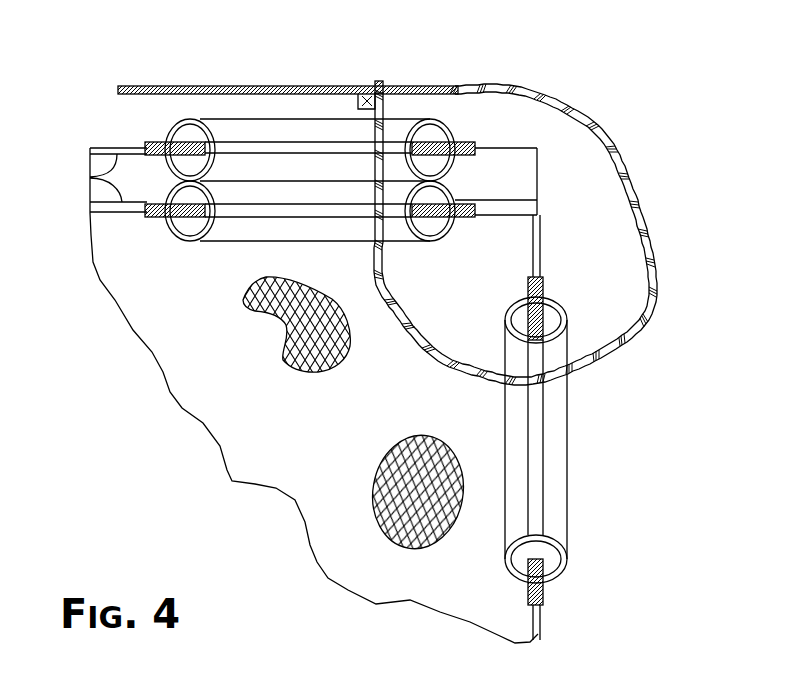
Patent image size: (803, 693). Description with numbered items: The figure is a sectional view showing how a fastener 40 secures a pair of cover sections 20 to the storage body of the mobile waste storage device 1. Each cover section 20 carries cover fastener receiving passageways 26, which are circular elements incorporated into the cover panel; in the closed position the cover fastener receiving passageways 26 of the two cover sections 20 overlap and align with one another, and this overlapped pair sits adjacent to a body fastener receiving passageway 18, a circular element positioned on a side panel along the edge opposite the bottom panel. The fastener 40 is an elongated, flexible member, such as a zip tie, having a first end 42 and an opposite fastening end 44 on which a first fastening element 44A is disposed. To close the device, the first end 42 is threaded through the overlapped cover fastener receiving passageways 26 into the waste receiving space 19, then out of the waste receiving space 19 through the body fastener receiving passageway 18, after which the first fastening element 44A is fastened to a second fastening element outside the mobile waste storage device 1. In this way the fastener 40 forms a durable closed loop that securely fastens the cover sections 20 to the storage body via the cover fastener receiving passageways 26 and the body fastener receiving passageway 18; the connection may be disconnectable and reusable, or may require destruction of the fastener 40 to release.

The mobile waste storage device 1 is at (553, 629).
The body fastener receiving passageway 18 is at (567, 560).
The waste receiving space 19 is at (357, 416).
The cover section 20 is at (98, 176).
The cover fastener receiving passageway 26 is at (166, 131).
The fastener 40 is at (622, 167).
The first end 42 is at (140, 86).
The fastening end 44 is at (378, 80).
The first fastening element 44A is at (362, 86).